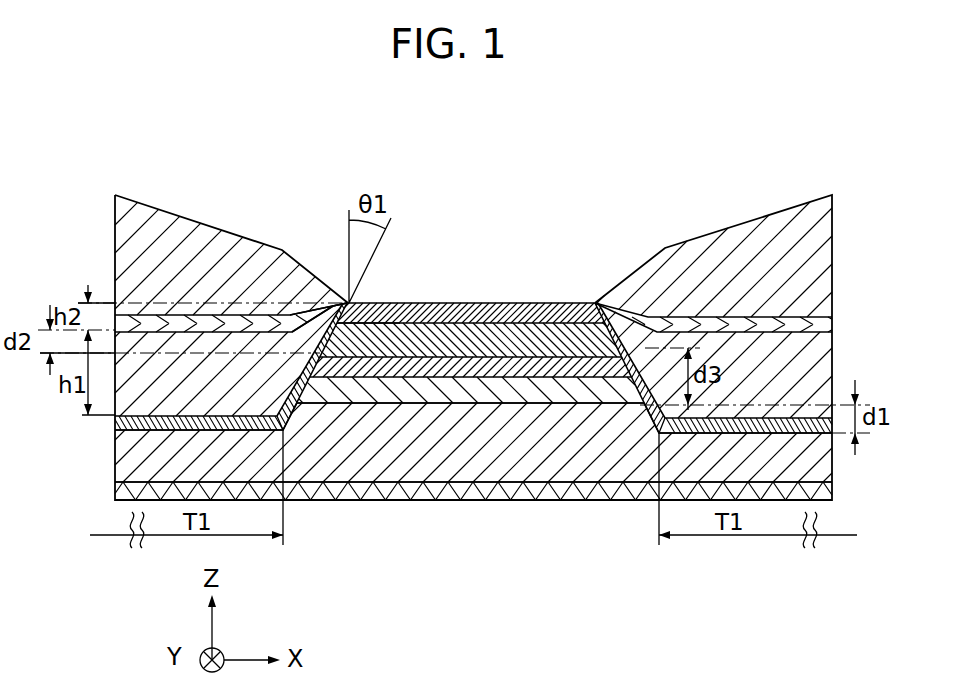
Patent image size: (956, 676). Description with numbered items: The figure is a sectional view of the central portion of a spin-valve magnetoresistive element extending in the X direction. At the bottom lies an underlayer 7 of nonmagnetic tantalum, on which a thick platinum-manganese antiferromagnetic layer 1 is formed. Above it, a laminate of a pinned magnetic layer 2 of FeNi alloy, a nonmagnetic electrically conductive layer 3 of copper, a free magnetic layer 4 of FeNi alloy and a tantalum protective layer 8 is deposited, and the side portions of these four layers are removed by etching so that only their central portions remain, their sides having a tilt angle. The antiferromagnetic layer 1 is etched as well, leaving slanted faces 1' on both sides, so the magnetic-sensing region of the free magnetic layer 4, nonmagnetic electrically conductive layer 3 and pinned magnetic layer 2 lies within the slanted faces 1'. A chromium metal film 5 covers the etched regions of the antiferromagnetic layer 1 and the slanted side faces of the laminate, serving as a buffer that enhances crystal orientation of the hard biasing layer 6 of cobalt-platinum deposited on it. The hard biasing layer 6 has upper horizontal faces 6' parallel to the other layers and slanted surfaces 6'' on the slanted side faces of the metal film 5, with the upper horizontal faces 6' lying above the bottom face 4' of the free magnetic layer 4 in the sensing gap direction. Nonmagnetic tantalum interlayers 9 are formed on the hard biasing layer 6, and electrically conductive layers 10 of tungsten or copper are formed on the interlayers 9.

The antiferromagnetic layer 1 is at (473, 481).
The slanted faces 1' is at (471, 480).
The pinned magnetic layer 2 is at (572, 310).
The nonmagnetic electrically conductive layer 3 is at (540, 370).
The free magnetic layer 4 is at (471, 309).
The bottom face of the free magnetic layer 4' is at (374, 293).
The metal film 5 is at (125, 422).
The hard biasing layer 6 is at (473, 293).
The upper horizontal faces 6' is at (296, 250).
The slanted surfaces 6'' is at (332, 258).
The underlayer 7 is at (430, 495).
The protective layer 8 is at (437, 303).
The interlayers 9 is at (152, 302).
The electrically conductive layers 10 is at (200, 243).